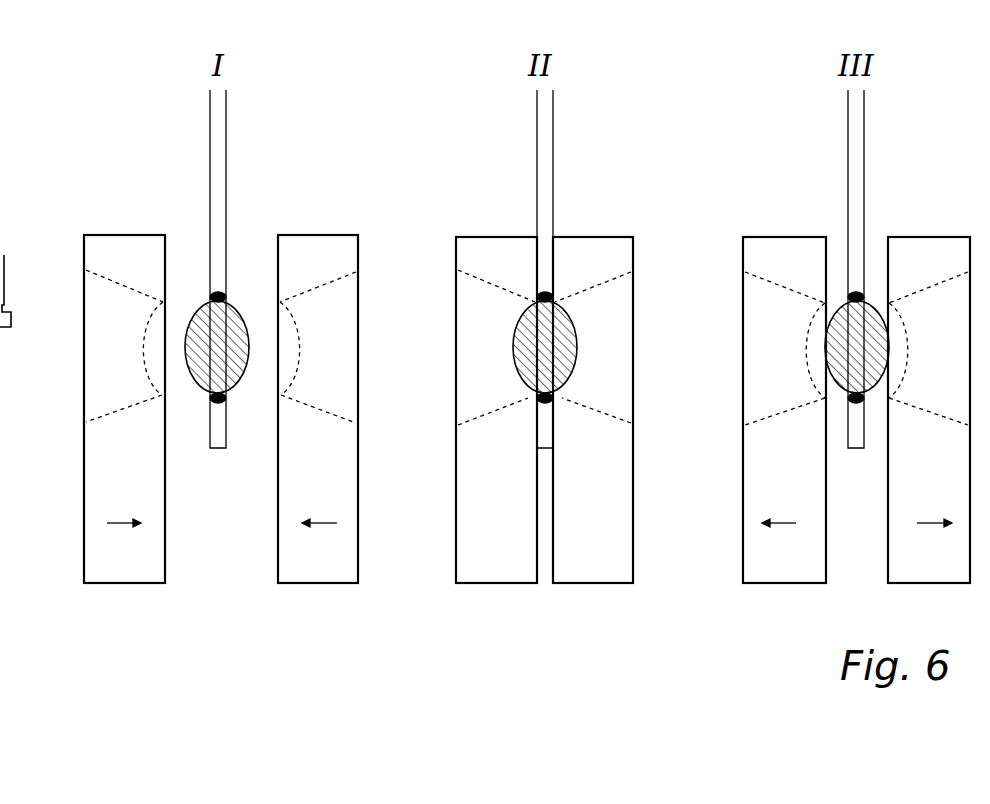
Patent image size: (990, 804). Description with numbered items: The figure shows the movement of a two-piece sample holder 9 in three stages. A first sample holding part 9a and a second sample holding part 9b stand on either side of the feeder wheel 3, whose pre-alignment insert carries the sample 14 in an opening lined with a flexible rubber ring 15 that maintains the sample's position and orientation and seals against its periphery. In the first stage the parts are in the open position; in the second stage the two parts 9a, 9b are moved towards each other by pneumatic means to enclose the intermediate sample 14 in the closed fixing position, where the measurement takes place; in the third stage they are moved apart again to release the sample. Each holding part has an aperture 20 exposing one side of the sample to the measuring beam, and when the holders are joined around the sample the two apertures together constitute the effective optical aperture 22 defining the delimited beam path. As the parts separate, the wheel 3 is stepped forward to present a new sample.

The feeder wheel 3 is at (218, 190).
The sample holding parts 9 is at (585, 223).
The first sample holding part 9a is at (117, 245).
The second sample holding part 9b is at (322, 245).
The sample 14 is at (563, 330).
The flexible rubber ring 15 is at (215, 294).
The aperture 20 is at (327, 283).
The effective optical aperture 22 is at (483, 390).